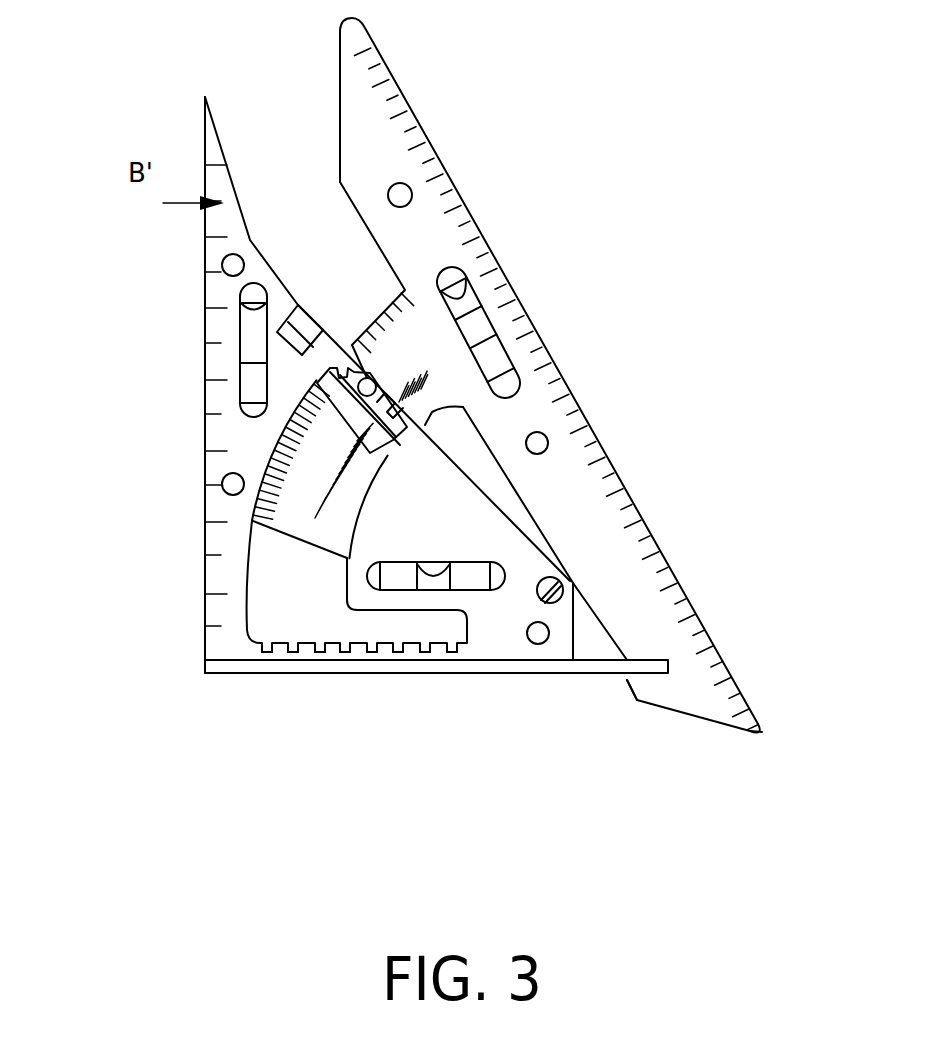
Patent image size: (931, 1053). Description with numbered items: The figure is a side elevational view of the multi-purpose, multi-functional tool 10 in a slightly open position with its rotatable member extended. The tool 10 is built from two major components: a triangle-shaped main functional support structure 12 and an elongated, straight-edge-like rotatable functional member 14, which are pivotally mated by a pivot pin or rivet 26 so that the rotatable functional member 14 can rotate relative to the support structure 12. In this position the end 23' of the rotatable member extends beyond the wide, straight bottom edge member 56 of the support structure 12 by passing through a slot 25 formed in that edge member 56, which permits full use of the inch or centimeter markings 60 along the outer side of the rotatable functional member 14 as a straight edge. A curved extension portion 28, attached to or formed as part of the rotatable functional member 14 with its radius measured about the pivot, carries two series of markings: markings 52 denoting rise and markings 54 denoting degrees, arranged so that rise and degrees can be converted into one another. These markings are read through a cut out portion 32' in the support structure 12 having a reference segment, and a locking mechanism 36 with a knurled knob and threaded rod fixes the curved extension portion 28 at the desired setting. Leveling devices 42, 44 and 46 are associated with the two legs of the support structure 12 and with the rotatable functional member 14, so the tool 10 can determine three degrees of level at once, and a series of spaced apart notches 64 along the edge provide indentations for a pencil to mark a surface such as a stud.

The multi-purpose, multi-functional tool 10 is at (282, 718).
The main functional support structure 12 is at (453, 538).
The rotatable functional member 14 is at (570, 510).
The end of rotatable member 23' is at (738, 765).
The slot 25 is at (627, 682).
The pivot pin or rivet 26 is at (573, 583).
The curved extension portion 28 is at (350, 512).
The cut out portion 32' is at (362, 355).
The locking mechanism 36 is at (316, 332).
The leveling device 42 is at (477, 591).
The leveling device 44 is at (257, 323).
The leveling device 46 is at (481, 335).
The markings denoting rise 52 is at (432, 380).
The markings denoting degrees 54 is at (422, 315).
The edge member 56 is at (245, 668).
The markings 60 is at (490, 271).
The spaced apart notches 64 is at (363, 643).